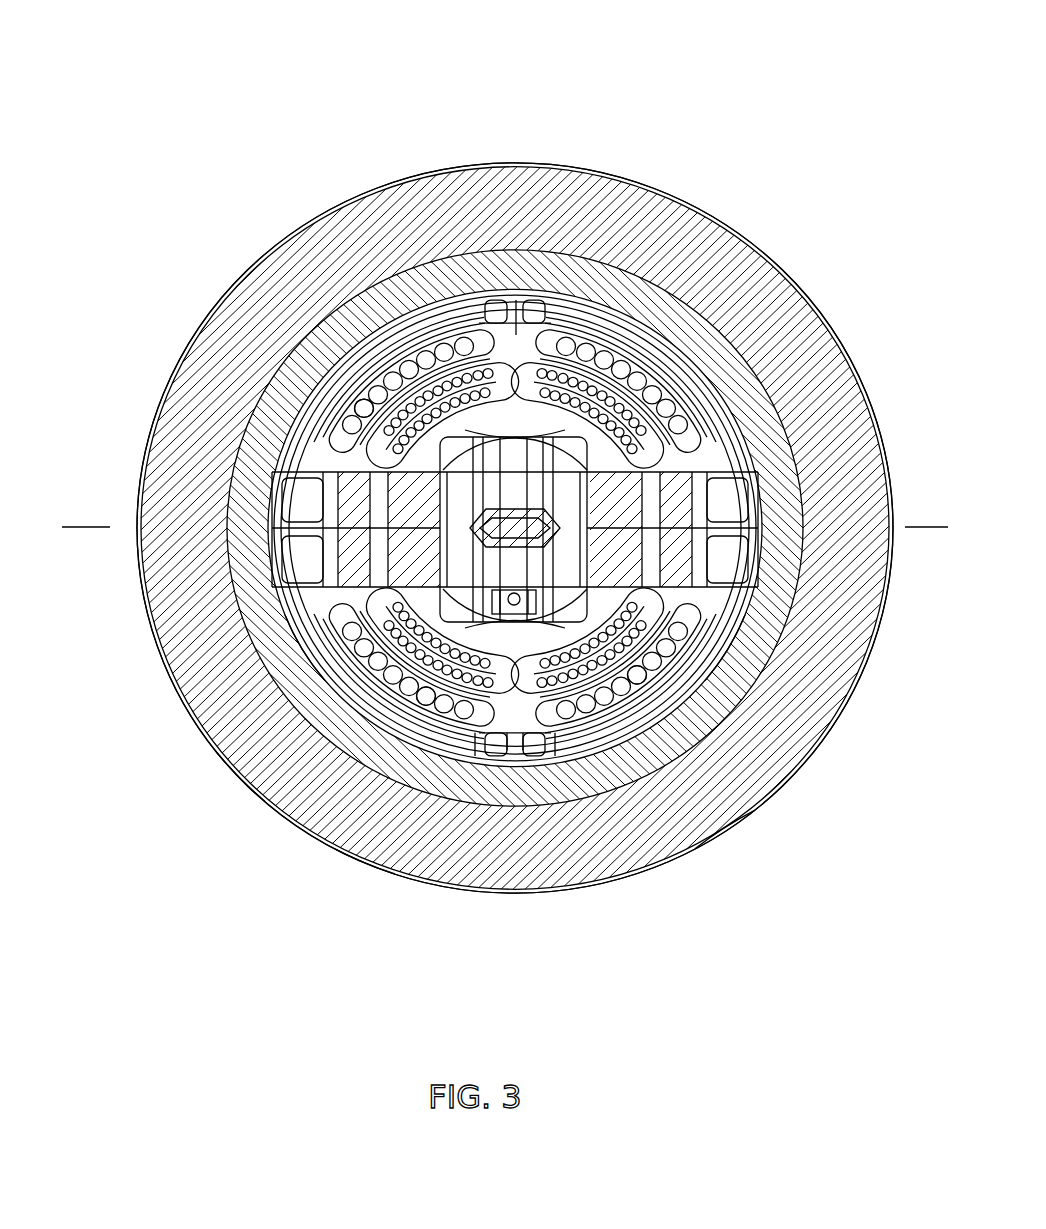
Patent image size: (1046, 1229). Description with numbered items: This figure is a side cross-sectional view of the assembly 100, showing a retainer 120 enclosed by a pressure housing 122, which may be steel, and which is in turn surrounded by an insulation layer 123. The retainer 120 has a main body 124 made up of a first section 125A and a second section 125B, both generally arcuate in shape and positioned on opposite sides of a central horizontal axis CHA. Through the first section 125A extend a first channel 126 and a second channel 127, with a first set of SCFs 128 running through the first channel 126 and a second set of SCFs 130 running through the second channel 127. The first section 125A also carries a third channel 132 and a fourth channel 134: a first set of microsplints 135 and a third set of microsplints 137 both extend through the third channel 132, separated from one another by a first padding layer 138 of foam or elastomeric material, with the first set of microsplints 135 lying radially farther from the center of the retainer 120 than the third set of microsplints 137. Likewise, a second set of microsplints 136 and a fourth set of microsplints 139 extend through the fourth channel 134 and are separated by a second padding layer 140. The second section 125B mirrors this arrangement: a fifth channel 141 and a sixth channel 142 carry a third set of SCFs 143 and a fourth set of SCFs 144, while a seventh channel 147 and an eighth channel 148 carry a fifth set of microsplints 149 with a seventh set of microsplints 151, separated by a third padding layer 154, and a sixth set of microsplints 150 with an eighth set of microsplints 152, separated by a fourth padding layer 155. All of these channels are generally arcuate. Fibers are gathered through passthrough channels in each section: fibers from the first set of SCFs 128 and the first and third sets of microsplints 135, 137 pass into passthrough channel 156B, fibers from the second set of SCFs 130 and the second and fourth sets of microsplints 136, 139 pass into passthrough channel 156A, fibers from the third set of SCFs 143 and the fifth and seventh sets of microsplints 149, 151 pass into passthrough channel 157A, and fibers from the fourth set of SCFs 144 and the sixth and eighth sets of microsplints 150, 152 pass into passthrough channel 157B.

The assembly 100 is at (758, 47).
The retainer 120 is at (592, 748).
The pressure housing 122 is at (706, 370).
The insulation layer 123 is at (818, 357).
The main body 124 is at (516, 352).
The first section 125A is at (538, 423).
The second section 125B is at (538, 648).
The first channel 126 is at (478, 330).
The second channel 127 is at (582, 360).
The first set of SCFs 128 is at (368, 405).
The second set of SCFs 130 is at (700, 345).
The third channel 132 is at (492, 529).
The fourth channel 134 is at (573, 455).
The first set of microsplints 135 is at (300, 470).
The second set of microsplints 136 is at (690, 390).
The third set of microsplints 137 is at (400, 360).
The first padding layer 138 is at (496, 318).
The fourth set of microsplints 139 is at (630, 340).
The second padding layer 140 is at (758, 462).
The fifth channel 141 is at (421, 705).
The sixth channel 142 is at (470, 745).
The third set of SCFs 143 is at (362, 838).
The fourth set of SCFs 144 is at (726, 828).
The seventh channel 147 is at (456, 603).
The eighth channel 148 is at (572, 603).
The fifth set of microsplints 149 is at (300, 655).
The sixth set of microsplints 150 is at (735, 708).
The seventh set of microsplints 151 is at (255, 785).
The eighth set of microsplints 152 is at (638, 680).
The third padding layer 154 is at (505, 748).
The fourth padding layer 155 is at (745, 690).
The passthrough channel 156A is at (311, 495).
The passthrough channel 156B is at (719, 495).
The passthrough channel 157A is at (719, 562).
The passthrough channel 157B is at (311, 562).
The central horizontal axis CHA is at (940, 532).